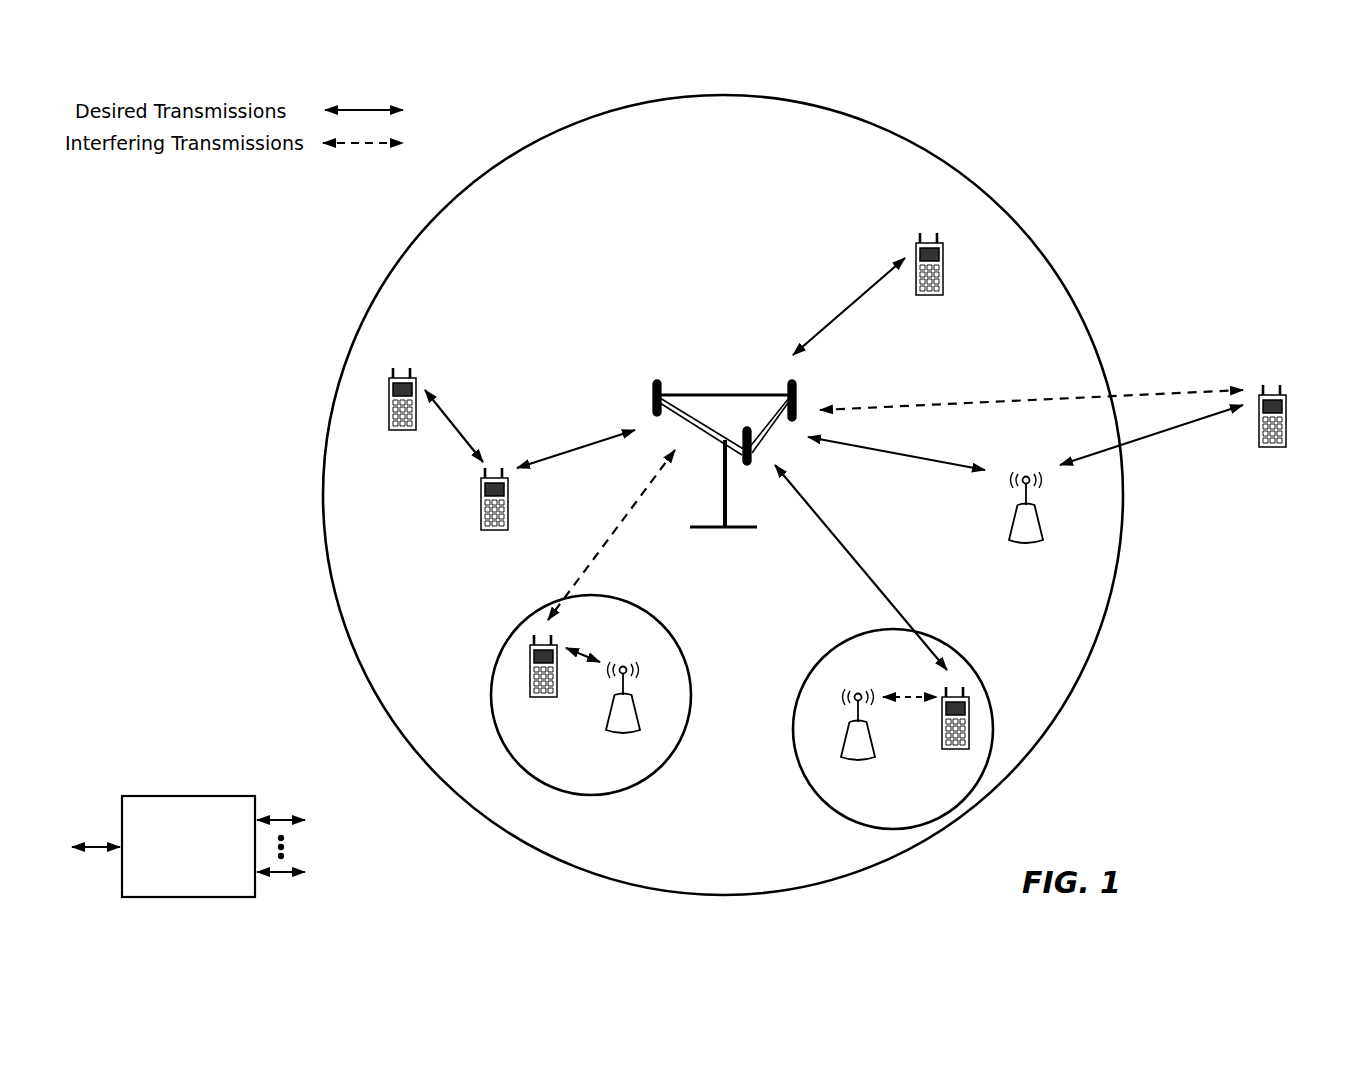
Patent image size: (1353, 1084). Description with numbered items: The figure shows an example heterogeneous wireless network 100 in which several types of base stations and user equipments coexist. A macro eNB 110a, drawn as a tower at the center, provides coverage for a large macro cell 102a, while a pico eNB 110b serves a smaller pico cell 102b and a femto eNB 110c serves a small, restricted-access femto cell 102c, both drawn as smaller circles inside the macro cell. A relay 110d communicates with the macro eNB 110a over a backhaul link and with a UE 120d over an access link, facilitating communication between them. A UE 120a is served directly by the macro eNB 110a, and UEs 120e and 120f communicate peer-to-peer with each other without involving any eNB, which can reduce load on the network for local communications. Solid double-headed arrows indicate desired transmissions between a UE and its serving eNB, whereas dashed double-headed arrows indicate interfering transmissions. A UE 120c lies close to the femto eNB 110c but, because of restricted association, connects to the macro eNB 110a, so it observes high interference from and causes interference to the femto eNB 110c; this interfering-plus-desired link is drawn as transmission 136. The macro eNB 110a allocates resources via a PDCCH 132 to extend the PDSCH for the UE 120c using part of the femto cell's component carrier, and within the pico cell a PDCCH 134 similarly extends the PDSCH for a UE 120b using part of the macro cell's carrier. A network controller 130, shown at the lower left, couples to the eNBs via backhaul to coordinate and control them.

The heterogeneous wireless network 100 is at (1196, 160).
The macro cell 102a is at (989, 194).
The pico cell 102b is at (680, 613).
The femto cell 102c is at (816, 659).
The macro eNB 110a is at (732, 382).
The pico eNB 110b is at (639, 720).
The femto eNB 110c is at (840, 749).
The relay 110d is at (1025, 478).
The UE 120a is at (943, 256).
The UE 120b is at (531, 690).
The UE 120c is at (942, 744).
The UE 120d is at (1286, 407).
The UE 120e is at (481, 497).
The UE 120f is at (388, 388).
The network controller 130 is at (185, 796).
The PDCCH 132 is at (906, 512).
The PDCCH 134 is at (597, 613).
The transmission between macro eNB and UE 120c 136 is at (904, 645).